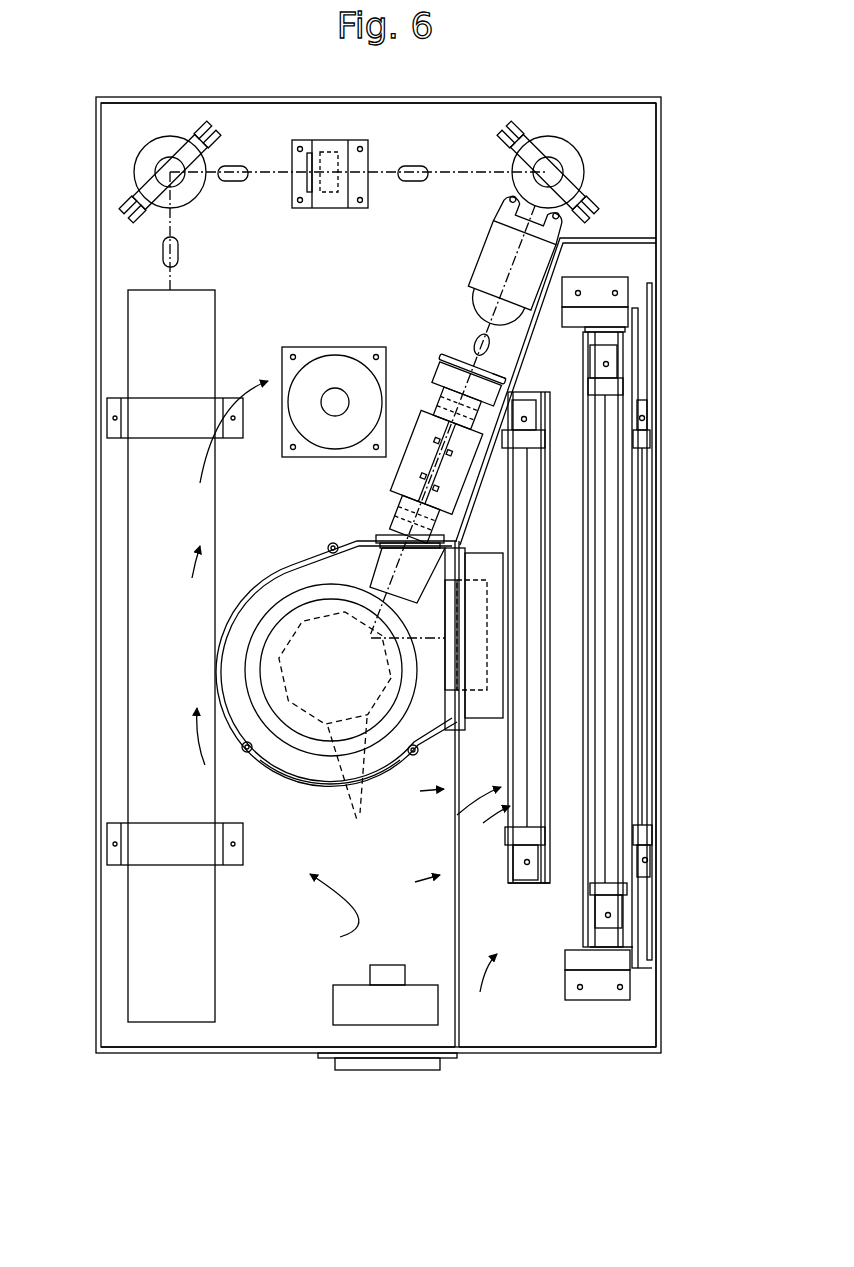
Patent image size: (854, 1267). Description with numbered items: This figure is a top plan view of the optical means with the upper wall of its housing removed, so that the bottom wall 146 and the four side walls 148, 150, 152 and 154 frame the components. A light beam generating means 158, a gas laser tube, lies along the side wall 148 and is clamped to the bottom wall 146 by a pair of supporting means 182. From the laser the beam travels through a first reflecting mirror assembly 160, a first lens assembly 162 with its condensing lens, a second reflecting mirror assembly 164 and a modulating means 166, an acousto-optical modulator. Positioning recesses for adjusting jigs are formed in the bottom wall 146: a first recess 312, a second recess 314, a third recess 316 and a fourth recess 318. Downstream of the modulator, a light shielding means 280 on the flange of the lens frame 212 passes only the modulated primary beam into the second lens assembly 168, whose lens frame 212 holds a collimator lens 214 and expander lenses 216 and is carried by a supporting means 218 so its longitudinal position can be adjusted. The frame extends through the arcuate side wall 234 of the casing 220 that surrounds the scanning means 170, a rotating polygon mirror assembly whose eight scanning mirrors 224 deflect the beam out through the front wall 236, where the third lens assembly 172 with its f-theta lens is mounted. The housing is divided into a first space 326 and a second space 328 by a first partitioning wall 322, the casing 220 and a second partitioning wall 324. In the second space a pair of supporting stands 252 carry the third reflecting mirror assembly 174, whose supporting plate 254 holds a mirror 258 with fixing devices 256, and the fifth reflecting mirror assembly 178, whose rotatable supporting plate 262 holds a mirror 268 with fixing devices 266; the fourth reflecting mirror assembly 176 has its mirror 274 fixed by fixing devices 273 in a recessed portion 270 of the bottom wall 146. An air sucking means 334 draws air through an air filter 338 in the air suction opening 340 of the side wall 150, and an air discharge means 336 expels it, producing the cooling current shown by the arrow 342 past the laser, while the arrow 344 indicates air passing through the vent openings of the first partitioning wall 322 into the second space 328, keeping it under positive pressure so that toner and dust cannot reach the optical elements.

The bottom wall 146 is at (272, 1040).
The side wall 148 is at (101, 680).
The side wall 150 is at (548, 1052).
The side wall 152 is at (657, 355).
The side wall 154 is at (305, 97).
The light beam generating means 158 is at (126, 566).
The first reflecting mirror assembly 160 is at (143, 140).
The first lens assembly 162 is at (345, 135).
The second reflecting mirror assembly 164 is at (585, 137).
The modulating means 166 is at (470, 254).
The second lens assembly 168 is at (434, 402).
The scanning means 170 is at (275, 606).
The third lens assembly 172 is at (478, 720).
The third reflecting mirror assembly 174 is at (652, 480).
The fourth reflecting mirror assembly 176 is at (508, 842).
The fifth reflecting mirror assembly 178 is at (639, 780).
The supporting means 182 is at (233, 441).
The lens frame 212 is at (392, 533).
The collimator lens 214 is at (450, 362).
The expander lenses 216 is at (400, 500).
The supporting means 218 is at (400, 478).
The casing 220 is at (318, 797).
The scanning mirrors 224 is at (358, 798).
The side wall 234 is at (278, 572).
The front wall 236 is at (463, 545).
The supporting stands 252 is at (630, 300).
The supporting plate 254 is at (638, 898).
The fixing devices 256 is at (648, 437).
The mirror 258 is at (640, 720).
The supporting plate 262 is at (598, 598).
The fixing devices 266 is at (598, 383).
The mirror 268 is at (617, 656).
The recessed portion 270 is at (547, 818).
The fixing devices 273 is at (538, 440).
The mirror 274 is at (540, 542).
The light shielding means 280 is at (494, 371).
The first recess 312 is at (180, 253).
The second recess 314 is at (233, 168).
The third recess 316 is at (413, 168).
The fourth recess 318 is at (477, 337).
The first partitioning wall 322 is at (456, 940).
The second partitioning wall 324 is at (563, 258).
The first space 326 is at (355, 868).
The second space 328 is at (520, 980).
The air sucking means 334 is at (362, 985).
The air discharge means 336 is at (308, 347).
The air filter 338 is at (380, 1070).
The air suction opening 340 is at (340, 1060).
The arrow 342 is at (258, 378).
The arrow 344 is at (452, 898).